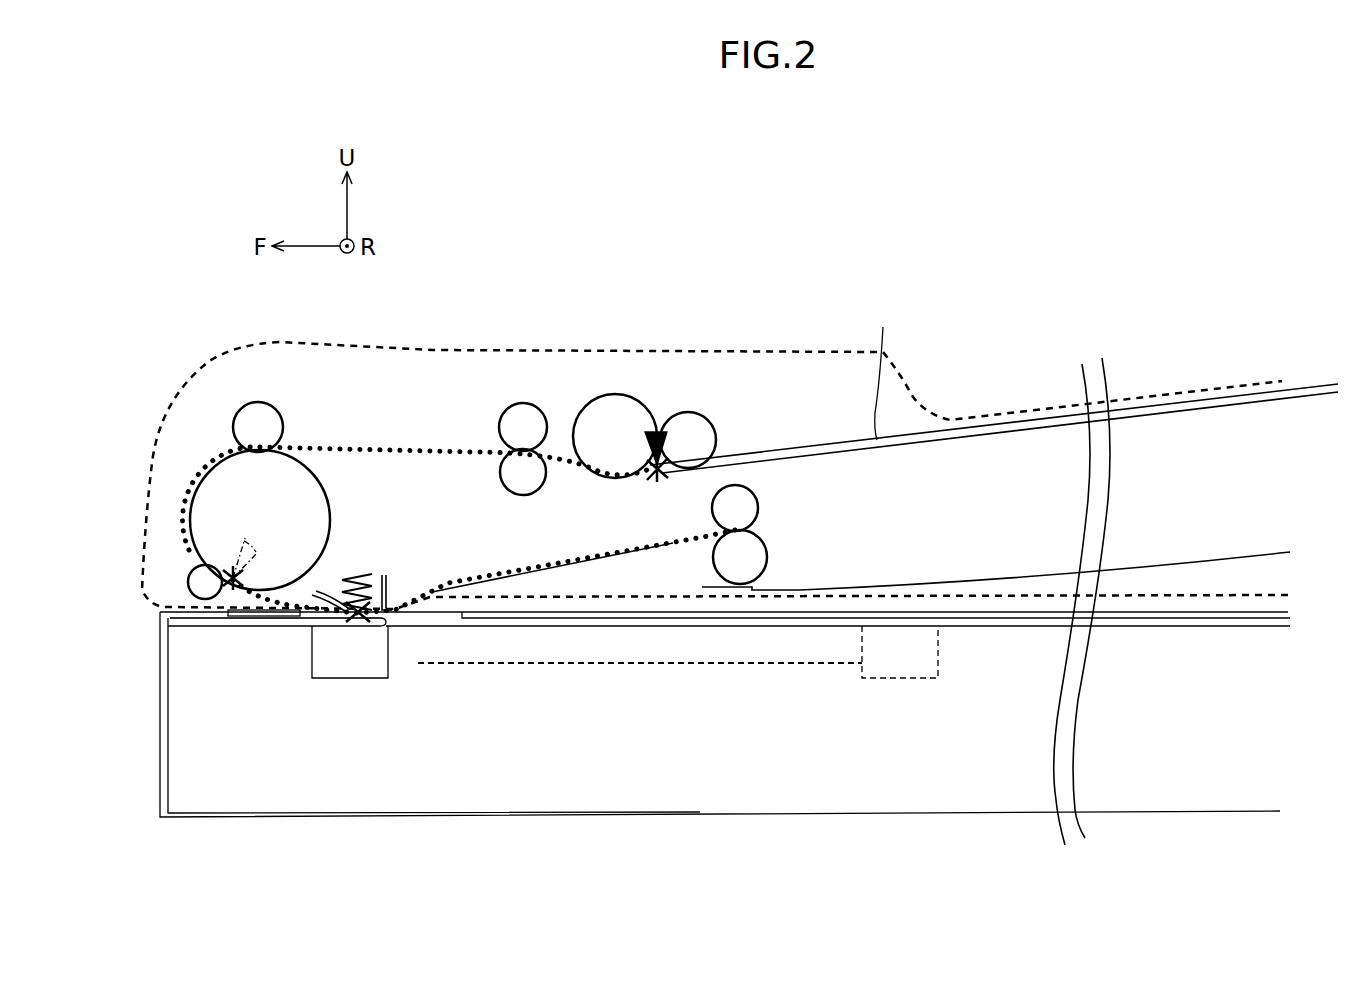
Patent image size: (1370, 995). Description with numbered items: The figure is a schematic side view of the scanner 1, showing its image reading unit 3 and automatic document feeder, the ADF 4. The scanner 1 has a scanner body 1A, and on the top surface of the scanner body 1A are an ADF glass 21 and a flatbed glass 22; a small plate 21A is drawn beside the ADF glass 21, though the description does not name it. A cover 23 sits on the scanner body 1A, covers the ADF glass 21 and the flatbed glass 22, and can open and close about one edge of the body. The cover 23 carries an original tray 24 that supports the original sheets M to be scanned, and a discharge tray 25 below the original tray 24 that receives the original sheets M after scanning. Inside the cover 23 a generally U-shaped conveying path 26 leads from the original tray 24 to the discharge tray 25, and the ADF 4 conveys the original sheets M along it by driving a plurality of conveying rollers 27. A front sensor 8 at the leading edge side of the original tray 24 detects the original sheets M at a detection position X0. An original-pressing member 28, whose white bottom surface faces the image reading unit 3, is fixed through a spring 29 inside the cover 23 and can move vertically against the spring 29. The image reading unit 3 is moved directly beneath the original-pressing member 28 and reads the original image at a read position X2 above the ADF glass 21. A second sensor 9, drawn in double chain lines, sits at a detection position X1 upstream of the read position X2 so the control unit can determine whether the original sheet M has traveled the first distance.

The scanner 1 is at (755, 191).
The scanner body 1A is at (160, 695).
The image reading unit 3 is at (389, 678).
The ADF 4 is at (186, 450).
The front sensor 8 is at (647, 447).
The second sensor 9 is at (256, 538).
The ADF glass 21 is at (211, 623).
The plate member 21A is at (290, 618).
The flatbed glass 22 is at (551, 622).
The cover 23 is at (432, 350).
The original tray 24 is at (1200, 400).
The discharge tray 25 is at (1188, 563).
The conveying path 26 is at (575, 556).
The conveying rollers 27 is at (247, 430).
The original-pressing member 28 is at (381, 578).
The spring 29 is at (343, 578).
The original sheets M is at (885, 368).
The detection position X0 is at (657, 477).
The detection position X1 is at (233, 582).
The read position X2 is at (368, 607).